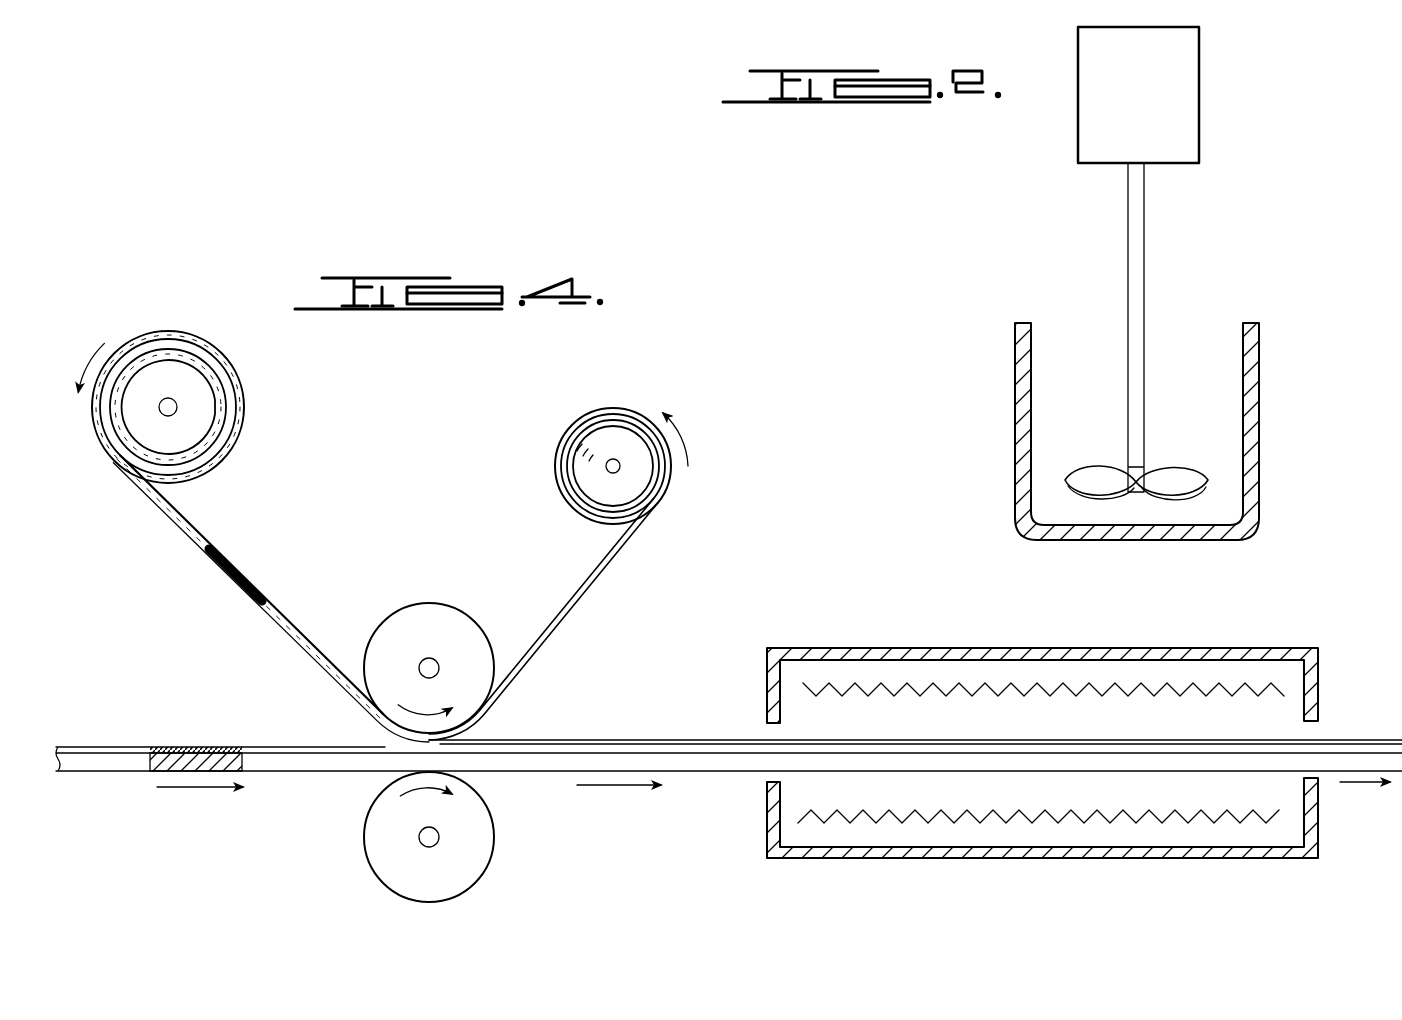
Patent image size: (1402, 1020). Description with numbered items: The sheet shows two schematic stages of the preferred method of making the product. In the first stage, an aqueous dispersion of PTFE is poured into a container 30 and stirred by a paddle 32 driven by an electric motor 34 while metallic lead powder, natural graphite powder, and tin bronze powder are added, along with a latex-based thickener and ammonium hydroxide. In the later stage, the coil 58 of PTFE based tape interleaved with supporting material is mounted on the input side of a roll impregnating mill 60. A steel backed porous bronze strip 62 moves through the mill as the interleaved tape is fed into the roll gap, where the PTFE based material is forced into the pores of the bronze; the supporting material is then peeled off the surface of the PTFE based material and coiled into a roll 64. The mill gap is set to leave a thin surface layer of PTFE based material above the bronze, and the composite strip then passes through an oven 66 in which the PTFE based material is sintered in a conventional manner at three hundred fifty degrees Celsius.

In FIG. 2, the container 30 is at (1260, 372).
In FIG. 2, the paddle 32 is at (1177, 478).
In FIG. 2, the electric motor 34 is at (1200, 105).
In FIG. 4, the coil of PTFE based tape 58 is at (168, 335).
In FIG. 4, the roll impregnating mill 60 is at (496, 838).
In FIG. 4, the steel backed porous bronze strip 62 is at (205, 745).
In FIG. 4, the roll of supporting material 64 is at (615, 410).
In FIG. 4, the oven 66 is at (972, 648).